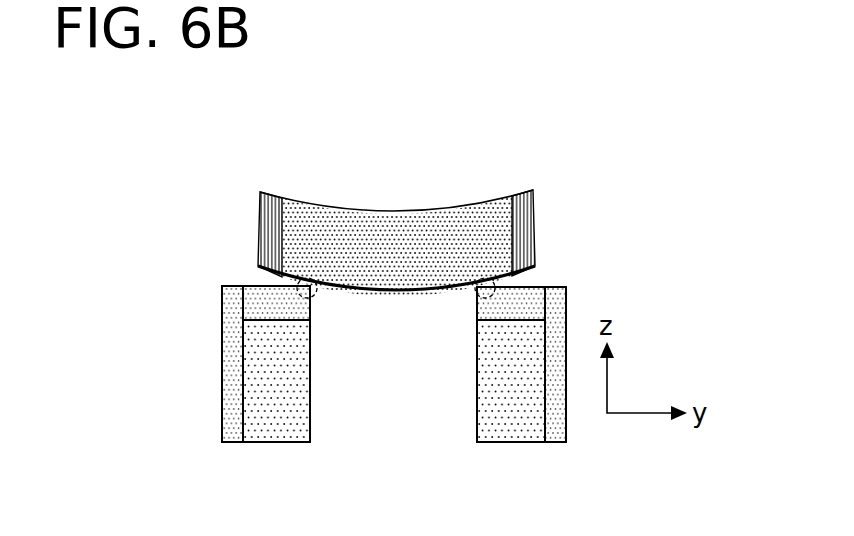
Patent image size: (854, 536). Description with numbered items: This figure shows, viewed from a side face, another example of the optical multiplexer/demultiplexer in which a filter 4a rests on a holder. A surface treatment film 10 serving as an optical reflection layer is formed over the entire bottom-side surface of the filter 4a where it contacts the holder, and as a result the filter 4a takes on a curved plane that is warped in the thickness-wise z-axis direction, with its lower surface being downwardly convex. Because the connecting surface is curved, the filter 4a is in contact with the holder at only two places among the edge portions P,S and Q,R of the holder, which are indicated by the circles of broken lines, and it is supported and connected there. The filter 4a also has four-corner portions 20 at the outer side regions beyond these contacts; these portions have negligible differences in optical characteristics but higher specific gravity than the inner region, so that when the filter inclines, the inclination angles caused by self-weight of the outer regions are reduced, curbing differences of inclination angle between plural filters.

The filter 4a is at (458, 111).
The four-corner portions 20 is at (396, 179).
The surface treatment film 10 is at (467, 269).
The edge portions P,S is at (336, 353).
The edge portions Q,R is at (453, 350).